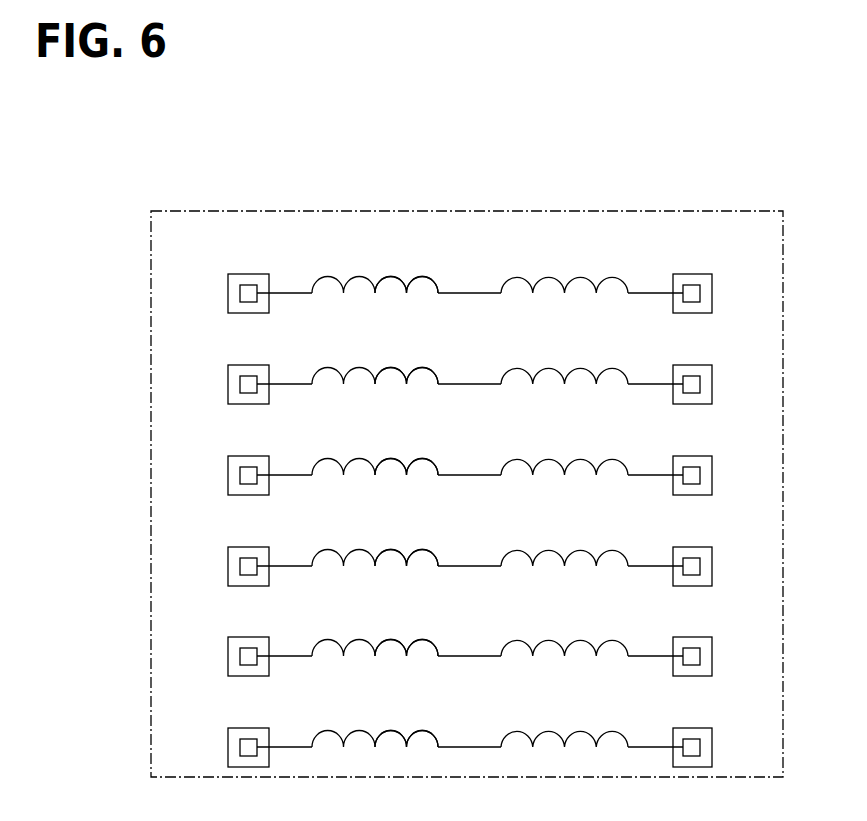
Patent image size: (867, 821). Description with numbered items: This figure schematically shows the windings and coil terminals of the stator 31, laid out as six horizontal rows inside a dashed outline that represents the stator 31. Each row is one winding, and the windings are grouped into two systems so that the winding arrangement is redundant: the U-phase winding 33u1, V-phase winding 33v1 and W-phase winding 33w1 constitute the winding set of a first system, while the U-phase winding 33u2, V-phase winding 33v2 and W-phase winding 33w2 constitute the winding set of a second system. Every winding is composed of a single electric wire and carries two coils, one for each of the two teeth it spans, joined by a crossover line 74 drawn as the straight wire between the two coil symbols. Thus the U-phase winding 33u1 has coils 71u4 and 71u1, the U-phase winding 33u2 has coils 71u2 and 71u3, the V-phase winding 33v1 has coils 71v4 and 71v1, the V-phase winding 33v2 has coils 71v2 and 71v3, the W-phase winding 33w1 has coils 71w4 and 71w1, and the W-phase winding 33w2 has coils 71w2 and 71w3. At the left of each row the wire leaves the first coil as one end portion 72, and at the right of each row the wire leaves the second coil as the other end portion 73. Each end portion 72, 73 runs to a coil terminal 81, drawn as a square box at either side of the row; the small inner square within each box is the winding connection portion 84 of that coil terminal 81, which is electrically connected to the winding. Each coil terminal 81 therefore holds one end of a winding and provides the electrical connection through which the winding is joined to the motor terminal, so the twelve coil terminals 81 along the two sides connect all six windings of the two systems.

The stator 31 is at (200, 211).
The coil terminal 81 is at (228, 293).
The winding connection portion 84 is at (247, 285).
The one end portion 72 is at (291, 292).
The other end portion 73 is at (650, 292).
The crossover line 74 is at (473, 293).
The coil 71u4 is at (358, 276).
The U-phase winding 33u1 is at (423, 277).
The coil 71u1 is at (547, 276).
The coil 71u2 is at (358, 367).
The U-phase winding 33u2 is at (423, 368).
The coil 71u3 is at (547, 367).
The coil 71v4 is at (358, 458).
The V-phase winding 33v1 is at (423, 459).
The coil 71v1 is at (547, 458).
The coil 71v2 is at (358, 549).
The V-phase winding 33v2 is at (423, 550).
The coil 71v3 is at (547, 549).
The coil 71w4 is at (358, 639).
The W-phase winding 33w1 is at (423, 640).
The coil 71w1 is at (547, 639).
The coil 71w2 is at (358, 730).
The W-phase winding 33w2 is at (423, 731).
The coil 71w3 is at (547, 730).